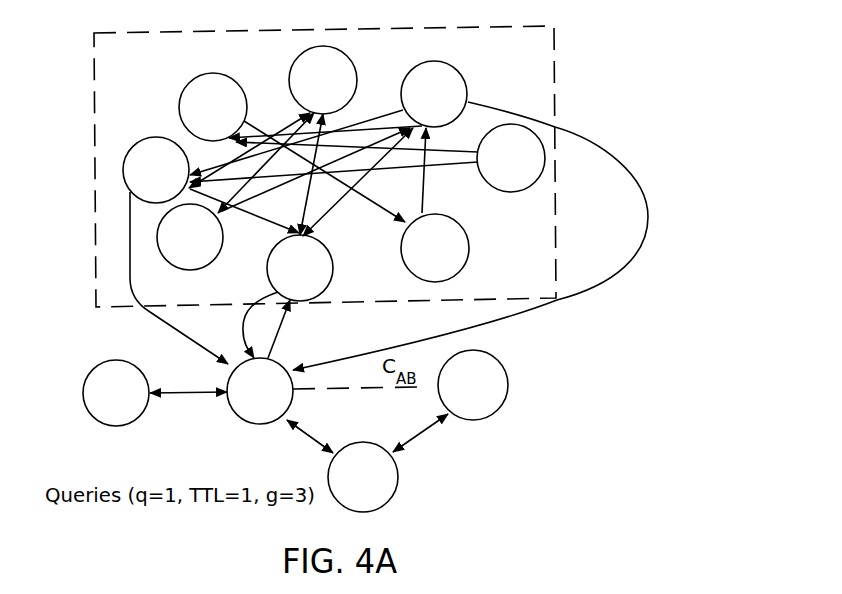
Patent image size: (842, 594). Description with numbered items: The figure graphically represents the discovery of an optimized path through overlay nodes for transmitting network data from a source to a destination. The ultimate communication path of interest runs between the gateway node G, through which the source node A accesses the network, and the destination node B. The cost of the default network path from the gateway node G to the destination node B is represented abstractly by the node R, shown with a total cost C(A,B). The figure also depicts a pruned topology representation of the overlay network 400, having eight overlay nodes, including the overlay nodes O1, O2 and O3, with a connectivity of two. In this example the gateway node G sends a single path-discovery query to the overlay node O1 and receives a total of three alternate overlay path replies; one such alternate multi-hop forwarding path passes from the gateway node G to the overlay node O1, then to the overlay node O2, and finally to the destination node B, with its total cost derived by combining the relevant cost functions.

The overlay network 400 is at (93, 162).
The overlay node O1 is at (300, 268).
The overlay node O2 is at (434, 94).
The overlay node O3 is at (156, 170).
The source node A is at (116, 393).
The gateway node G is at (260, 391).
The destination node B is at (473, 385).
The node representing default network path R is at (363, 477).